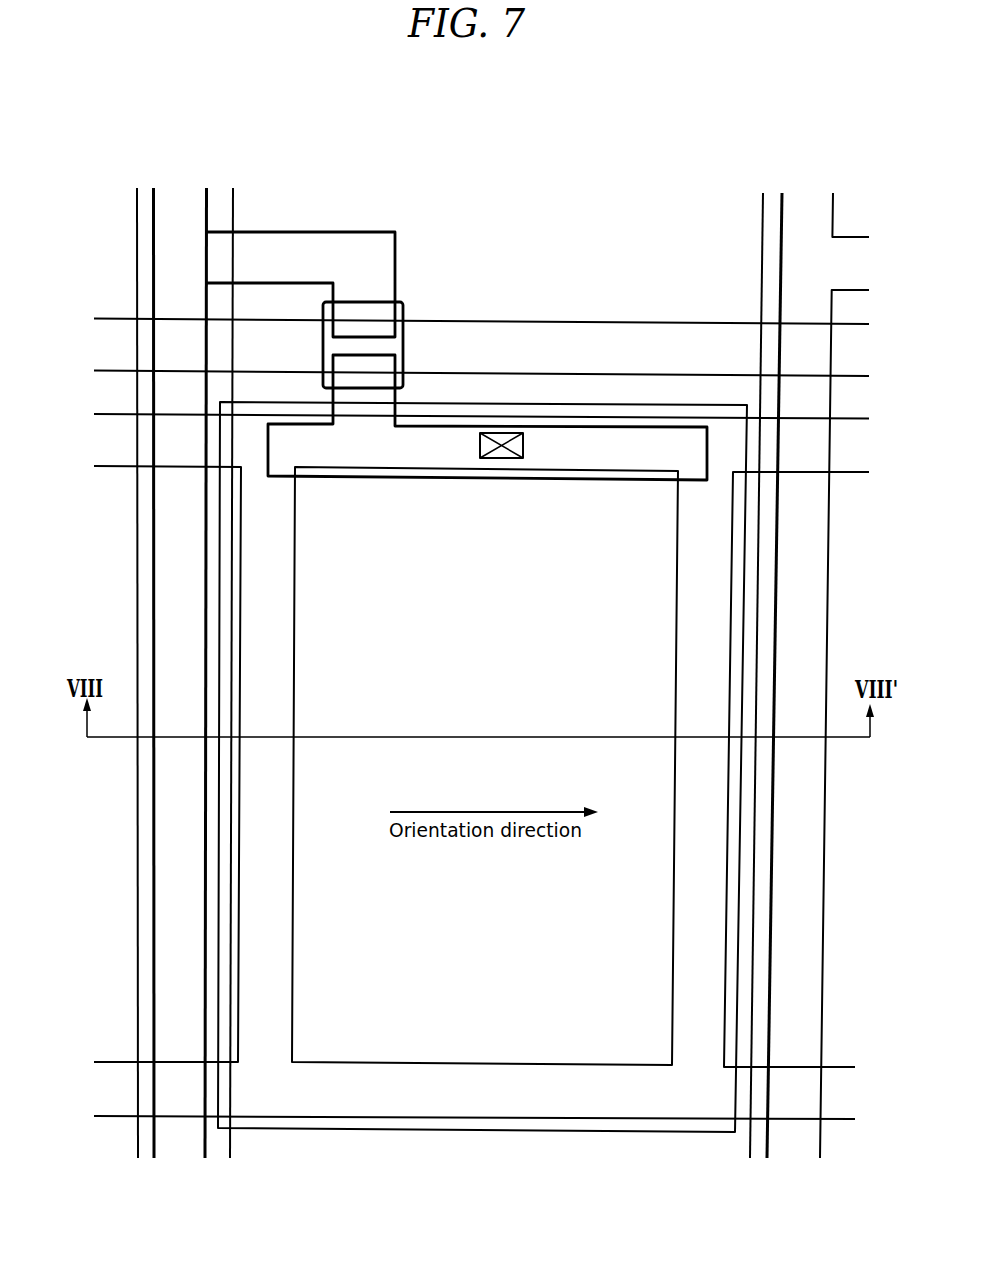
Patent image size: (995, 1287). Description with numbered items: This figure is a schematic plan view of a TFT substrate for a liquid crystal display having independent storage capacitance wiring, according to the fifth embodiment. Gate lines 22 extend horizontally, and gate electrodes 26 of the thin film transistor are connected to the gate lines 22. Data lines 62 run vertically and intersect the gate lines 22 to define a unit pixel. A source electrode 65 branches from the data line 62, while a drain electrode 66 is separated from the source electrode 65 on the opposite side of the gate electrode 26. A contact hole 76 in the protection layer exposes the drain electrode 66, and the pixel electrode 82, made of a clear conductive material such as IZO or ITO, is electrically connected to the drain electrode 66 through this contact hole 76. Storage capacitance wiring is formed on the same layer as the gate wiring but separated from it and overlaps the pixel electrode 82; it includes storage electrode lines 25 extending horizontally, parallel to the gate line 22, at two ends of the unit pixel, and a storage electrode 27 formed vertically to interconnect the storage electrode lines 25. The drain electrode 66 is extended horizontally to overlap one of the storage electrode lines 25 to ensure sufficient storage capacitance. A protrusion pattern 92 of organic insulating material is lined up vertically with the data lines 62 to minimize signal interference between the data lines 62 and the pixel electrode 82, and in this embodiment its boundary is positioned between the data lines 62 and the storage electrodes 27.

The gate line 22 is at (483, 333).
The storage electrode line 25 is at (112, 447).
The gate electrode 26 is at (398, 343).
The storage electrode 27 is at (287, 655).
The data line 62 is at (162, 592).
The source electrode 65 is at (338, 232).
The drain electrode 66 is at (600, 424).
The contact hole 76 is at (503, 458).
The pixel electrode 82 is at (220, 590).
The protrusion pattern 92 is at (231, 662).